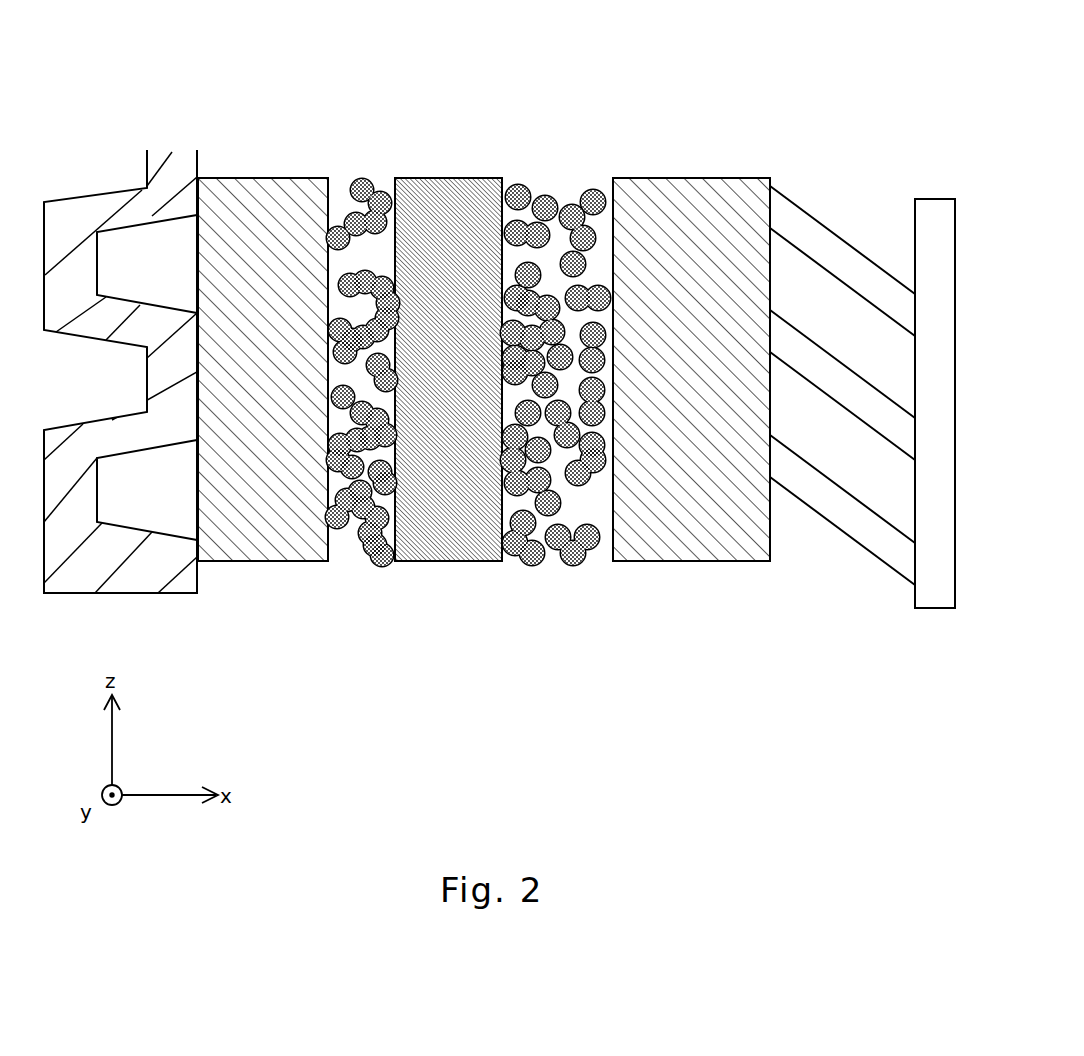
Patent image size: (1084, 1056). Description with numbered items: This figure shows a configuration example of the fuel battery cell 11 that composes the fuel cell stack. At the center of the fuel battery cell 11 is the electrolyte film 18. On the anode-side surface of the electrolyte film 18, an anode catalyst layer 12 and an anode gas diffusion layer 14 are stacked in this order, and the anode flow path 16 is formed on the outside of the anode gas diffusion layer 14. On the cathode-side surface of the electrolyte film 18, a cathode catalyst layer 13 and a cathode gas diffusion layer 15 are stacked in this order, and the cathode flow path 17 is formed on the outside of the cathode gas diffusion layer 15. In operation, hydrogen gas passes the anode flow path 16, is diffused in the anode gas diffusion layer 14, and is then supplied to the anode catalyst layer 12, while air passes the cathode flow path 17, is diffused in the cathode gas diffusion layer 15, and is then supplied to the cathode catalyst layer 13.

The fuel battery cell 11 is at (147, 30).
The anode catalyst layer 12 is at (345, 183).
The cathode catalyst layer 13 is at (570, 185).
The anode gas diffusion layer 14 is at (243, 177).
The cathode gas diffusion layer 15 is at (710, 177).
The anode flow path 16 is at (110, 240).
The cathode flow path 17 is at (797, 260).
The electrolyte film 18 is at (442, 177).